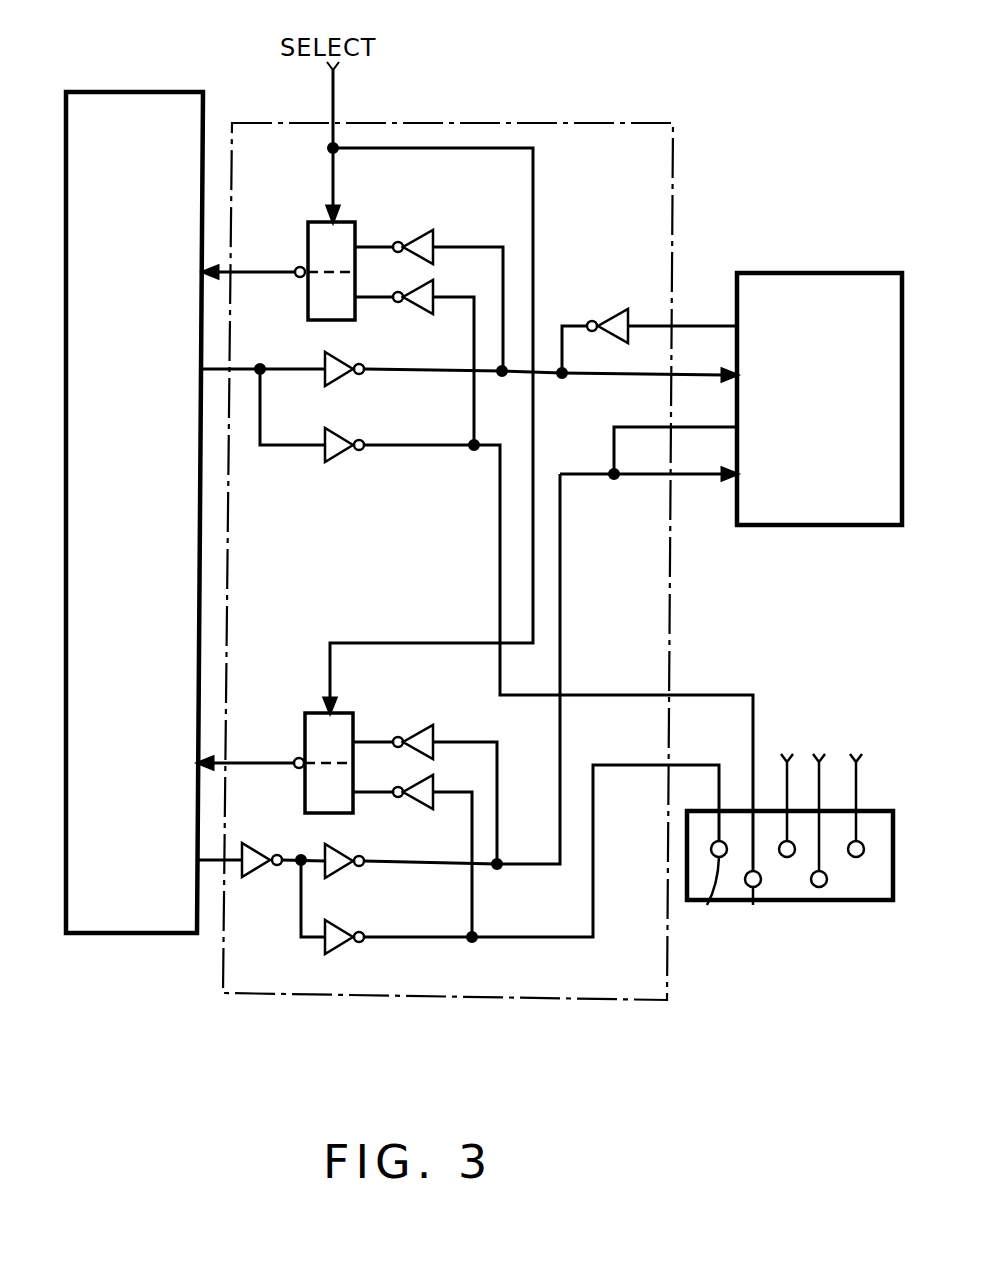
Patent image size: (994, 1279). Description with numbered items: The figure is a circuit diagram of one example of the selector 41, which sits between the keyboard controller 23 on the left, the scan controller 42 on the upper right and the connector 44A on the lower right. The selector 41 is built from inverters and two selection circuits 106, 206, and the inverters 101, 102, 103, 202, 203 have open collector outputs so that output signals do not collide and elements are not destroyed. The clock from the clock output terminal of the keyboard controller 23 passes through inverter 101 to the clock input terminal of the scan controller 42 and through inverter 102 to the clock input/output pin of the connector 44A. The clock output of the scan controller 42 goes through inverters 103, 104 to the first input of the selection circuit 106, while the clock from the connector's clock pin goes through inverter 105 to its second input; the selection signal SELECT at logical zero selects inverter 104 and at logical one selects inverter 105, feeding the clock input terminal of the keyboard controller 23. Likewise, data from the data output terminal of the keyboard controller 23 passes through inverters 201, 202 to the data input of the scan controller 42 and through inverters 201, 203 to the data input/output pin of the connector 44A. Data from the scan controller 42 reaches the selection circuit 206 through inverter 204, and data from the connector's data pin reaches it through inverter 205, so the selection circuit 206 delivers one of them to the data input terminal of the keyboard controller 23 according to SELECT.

The keyboard controller 23 is at (128, 92).
The selector 41 is at (472, 123).
The scan controller 42 is at (815, 273).
The connector 44A is at (858, 900).
The inverter 101 is at (356, 376).
The inverter 102 is at (356, 452).
The inverter 103 is at (614, 311).
The inverter 104 is at (423, 233).
The inverter 105 is at (412, 314).
The selection circuit 106 is at (357, 230).
The inverter 201 is at (262, 834).
The inverter 202 is at (356, 868).
The inverter 203 is at (356, 944).
The inverter 204 is at (421, 727).
The inverter 205 is at (425, 809).
The selection circuit 206 is at (310, 713).